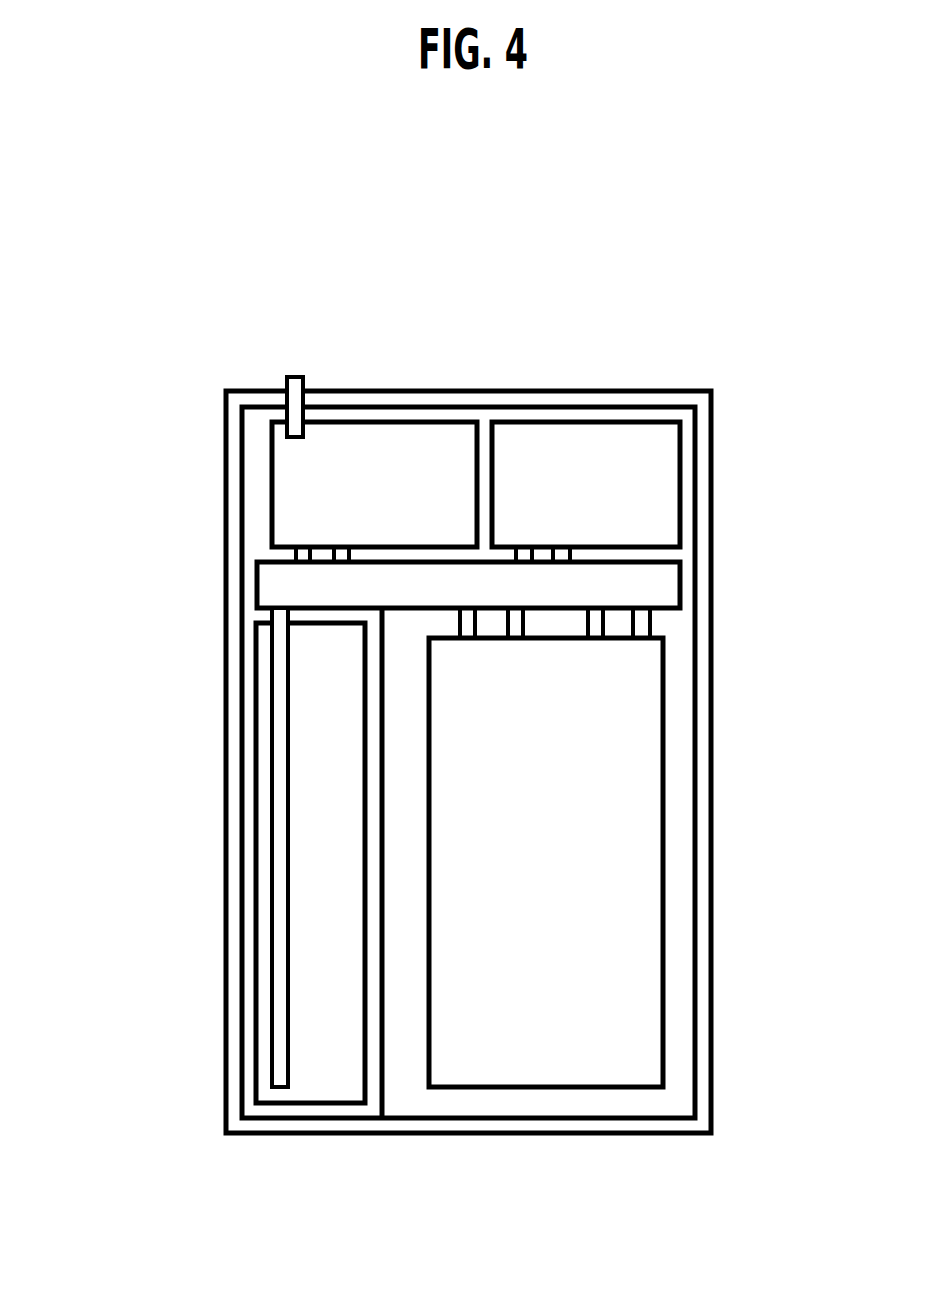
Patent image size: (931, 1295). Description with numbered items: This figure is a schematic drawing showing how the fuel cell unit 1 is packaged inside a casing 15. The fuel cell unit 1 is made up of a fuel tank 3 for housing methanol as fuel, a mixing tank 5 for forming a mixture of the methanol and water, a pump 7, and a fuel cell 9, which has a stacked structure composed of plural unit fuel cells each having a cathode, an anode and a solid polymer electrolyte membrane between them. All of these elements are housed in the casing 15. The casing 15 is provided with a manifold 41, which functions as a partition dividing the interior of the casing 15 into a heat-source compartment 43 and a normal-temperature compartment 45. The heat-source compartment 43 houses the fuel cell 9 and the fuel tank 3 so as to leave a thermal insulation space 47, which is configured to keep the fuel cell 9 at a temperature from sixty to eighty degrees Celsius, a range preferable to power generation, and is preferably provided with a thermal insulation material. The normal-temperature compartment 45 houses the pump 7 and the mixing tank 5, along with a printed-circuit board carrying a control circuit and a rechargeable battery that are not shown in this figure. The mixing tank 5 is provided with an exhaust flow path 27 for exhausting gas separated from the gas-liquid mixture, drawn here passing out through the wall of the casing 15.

The fuel cell unit 1 is at (122, 838).
The fuel tank 3 is at (325, 1078).
The mixing tank 5 is at (424, 440).
The pump 7 is at (627, 442).
The fuel cell 9 is at (633, 888).
The casing 15 is at (711, 490).
The exhaust flow path 27 is at (290, 375).
The manifold 41 is at (633, 592).
The heat-source compartment 43 is at (247, 1032).
The normal-temperature compartment 45 is at (255, 480).
The thermal insulation space 47 is at (672, 740).